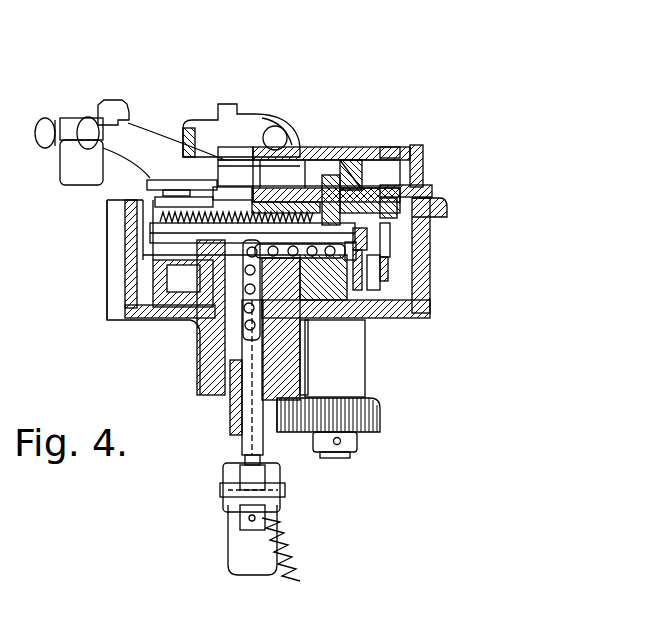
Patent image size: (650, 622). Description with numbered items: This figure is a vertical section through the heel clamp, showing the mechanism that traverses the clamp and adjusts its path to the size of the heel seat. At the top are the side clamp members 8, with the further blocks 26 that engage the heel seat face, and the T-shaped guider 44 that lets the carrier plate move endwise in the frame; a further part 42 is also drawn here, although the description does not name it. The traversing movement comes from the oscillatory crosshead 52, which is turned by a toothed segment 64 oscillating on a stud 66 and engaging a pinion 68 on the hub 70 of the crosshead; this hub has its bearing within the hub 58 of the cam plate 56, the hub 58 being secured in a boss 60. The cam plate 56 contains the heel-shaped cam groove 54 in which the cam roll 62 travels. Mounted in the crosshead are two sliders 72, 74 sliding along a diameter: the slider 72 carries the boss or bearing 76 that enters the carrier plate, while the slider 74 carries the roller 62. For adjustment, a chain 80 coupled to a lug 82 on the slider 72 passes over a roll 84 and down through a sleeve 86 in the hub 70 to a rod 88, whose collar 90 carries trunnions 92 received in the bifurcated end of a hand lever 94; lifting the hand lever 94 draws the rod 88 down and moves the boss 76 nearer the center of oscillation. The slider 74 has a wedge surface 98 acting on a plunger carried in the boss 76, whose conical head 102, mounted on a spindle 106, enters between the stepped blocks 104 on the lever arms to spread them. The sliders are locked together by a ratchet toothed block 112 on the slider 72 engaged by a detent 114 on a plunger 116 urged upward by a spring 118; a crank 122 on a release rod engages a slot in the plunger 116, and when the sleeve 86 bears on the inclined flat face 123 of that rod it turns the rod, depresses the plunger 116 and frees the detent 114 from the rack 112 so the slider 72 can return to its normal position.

The side clamp members 8 is at (75, 168).
The blocks 26 is at (120, 105).
The cam 42 is at (182, 130).
The T-shaped guider 44 is at (432, 190).
The oscillatory crosshead 52 is at (195, 314).
The cam groove 54 is at (168, 286).
The cam plate 56 is at (155, 279).
The hub 58 is at (281, 425).
The boss 60 is at (300, 365).
The cam roll 62 is at (387, 290).
The toothed segment 64 is at (350, 432).
The stud 66 is at (337, 453).
The pinion 68 is at (232, 415).
The hub 70 is at (240, 335).
The slider 72 is at (258, 195).
The slider 74 is at (168, 185).
The boss or bearing 76 is at (386, 182).
The chain 80 is at (365, 322).
The lug 82 is at (365, 325).
The roll 84 is at (308, 322).
The sleeve 86 is at (210, 343).
The rod 88 is at (203, 386).
The collar 90 is at (240, 505).
The trunnions 92 is at (280, 490).
The hand lever 94 is at (233, 478).
The wedge surface 98 is at (322, 185).
The conical head 102 is at (352, 170).
The stepped blocks 104 is at (330, 185).
The spindle 106 is at (336, 188).
The ratchet toothed block 112 is at (420, 187).
The detent 114 is at (392, 222).
The plunger 116 is at (382, 243).
The spring 118 is at (362, 300).
The crank 122 is at (384, 252).
The flat face 123 is at (161, 250).